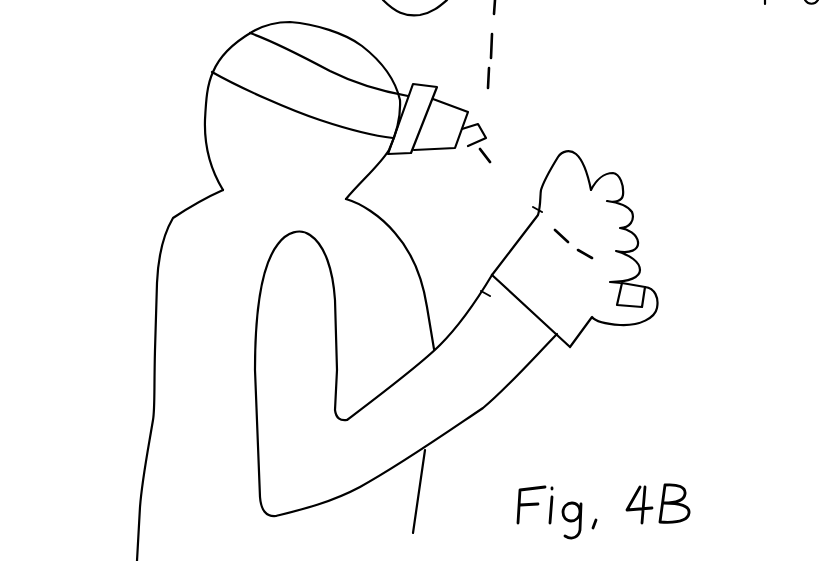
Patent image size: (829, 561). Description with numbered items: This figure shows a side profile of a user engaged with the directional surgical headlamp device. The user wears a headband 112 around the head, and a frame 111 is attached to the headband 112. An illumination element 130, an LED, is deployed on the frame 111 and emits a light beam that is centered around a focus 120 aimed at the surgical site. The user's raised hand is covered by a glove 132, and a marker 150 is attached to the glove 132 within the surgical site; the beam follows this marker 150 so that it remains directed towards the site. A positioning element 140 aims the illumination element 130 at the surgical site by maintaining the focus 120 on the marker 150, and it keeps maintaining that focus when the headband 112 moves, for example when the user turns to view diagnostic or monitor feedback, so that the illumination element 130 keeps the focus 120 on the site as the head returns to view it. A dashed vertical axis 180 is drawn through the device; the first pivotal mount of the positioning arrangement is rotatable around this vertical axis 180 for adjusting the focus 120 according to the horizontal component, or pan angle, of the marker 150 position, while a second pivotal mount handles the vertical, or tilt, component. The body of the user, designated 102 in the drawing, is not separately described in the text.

The user 102 is at (173, 218).
The headband 112 is at (232, 48).
The frame 111 is at (397, 36).
The illumination element 130 is at (478, 128).
The positioning element 140 is at (422, 151).
The focus 120 is at (516, 183).
The vertical axis 180 is at (497, 35).
The glove 132 is at (573, 299).
The marker 150 is at (644, 284).